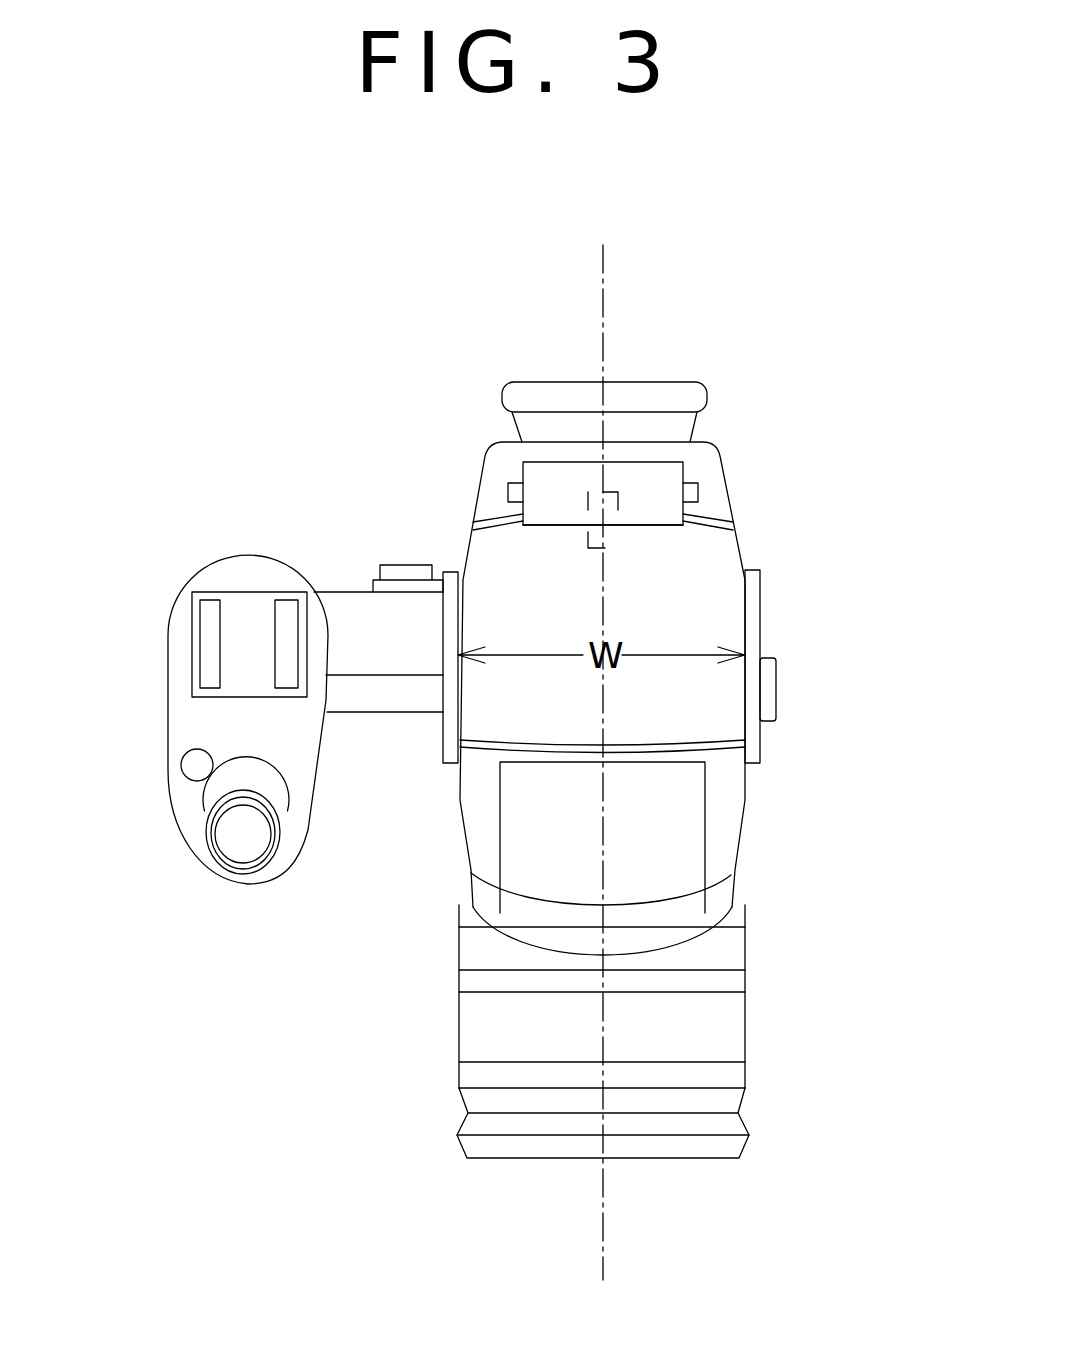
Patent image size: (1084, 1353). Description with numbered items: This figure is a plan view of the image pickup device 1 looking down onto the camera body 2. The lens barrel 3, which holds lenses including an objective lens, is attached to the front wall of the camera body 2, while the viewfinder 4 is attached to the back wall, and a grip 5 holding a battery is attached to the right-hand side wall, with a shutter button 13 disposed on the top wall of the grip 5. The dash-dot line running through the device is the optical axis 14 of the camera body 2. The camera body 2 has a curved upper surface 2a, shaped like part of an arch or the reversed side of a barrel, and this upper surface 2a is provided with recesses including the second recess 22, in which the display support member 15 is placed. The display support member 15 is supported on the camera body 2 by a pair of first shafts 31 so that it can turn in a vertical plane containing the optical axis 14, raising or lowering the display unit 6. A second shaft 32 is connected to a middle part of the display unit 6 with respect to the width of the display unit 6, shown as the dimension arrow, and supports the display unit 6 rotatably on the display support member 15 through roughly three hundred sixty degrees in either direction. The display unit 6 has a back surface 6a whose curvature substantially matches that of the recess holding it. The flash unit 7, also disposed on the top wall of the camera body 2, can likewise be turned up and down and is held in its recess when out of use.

The image pickup device 1 is at (803, 932).
The camera body 2 is at (760, 608).
The curved upper surface 2a is at (488, 497).
The lens barrel 3 is at (745, 1030).
The viewfinder 4 is at (655, 383).
The grip 5 is at (217, 730).
The display unit 6 is at (753, 733).
The back surface 6a is at (703, 627).
The flash unit 7 is at (707, 852).
The shutter button 13 is at (245, 838).
The optical axis 14 is at (603, 315).
The display support member 15 is at (545, 515).
The second recess 22 is at (538, 462).
The first shafts 31 is at (510, 487).
The second shaft 32 is at (618, 523).